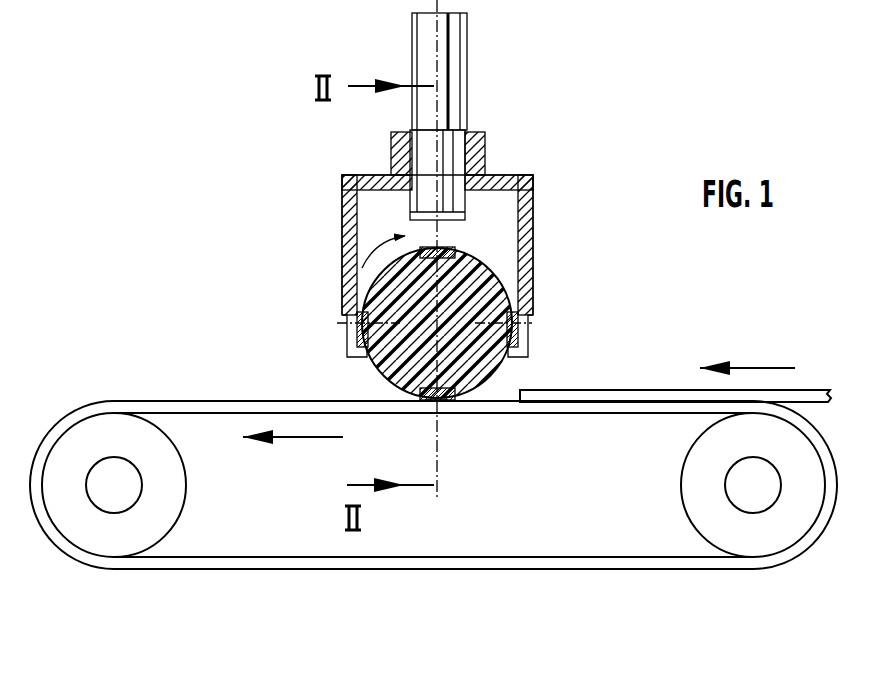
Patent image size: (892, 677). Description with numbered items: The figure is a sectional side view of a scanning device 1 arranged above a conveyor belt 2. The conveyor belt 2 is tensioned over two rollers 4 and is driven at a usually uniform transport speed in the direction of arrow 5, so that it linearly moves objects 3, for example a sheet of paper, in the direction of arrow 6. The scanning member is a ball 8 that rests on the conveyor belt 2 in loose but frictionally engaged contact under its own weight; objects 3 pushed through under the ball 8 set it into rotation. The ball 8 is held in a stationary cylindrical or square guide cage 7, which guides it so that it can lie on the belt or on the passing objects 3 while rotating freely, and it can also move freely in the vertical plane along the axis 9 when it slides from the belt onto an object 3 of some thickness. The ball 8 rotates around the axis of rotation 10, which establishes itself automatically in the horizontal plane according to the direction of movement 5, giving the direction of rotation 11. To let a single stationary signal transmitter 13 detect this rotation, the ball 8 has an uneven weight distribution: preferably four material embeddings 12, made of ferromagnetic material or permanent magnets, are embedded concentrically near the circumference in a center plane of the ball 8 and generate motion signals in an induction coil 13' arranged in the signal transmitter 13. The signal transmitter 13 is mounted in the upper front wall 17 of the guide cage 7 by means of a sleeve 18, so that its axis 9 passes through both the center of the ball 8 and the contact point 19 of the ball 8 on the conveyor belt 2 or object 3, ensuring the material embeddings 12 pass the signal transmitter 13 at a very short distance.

The scanning device 1 is at (563, 155).
The conveyor belt 2 is at (548, 566).
The object 3 is at (625, 398).
The roller 4 is at (103, 545).
The arrow indicating belt movement direction 5 is at (333, 438).
The arrow indicating object movement direction 6 is at (774, 367).
The guide cage 7 is at (538, 228).
The ball 8 is at (520, 272).
The axis 9 is at (437, 45).
The axis of rotation 10 is at (478, 402).
The direction of rotation 11 is at (345, 240).
The material embedding 12 is at (450, 255).
The signal transmitter 13 is at (462, 71).
The induction coil 13' is at (464, 155).
The upper front wall 17 is at (376, 178).
The sleeve 18 is at (485, 151).
The contact point 19 is at (430, 402).